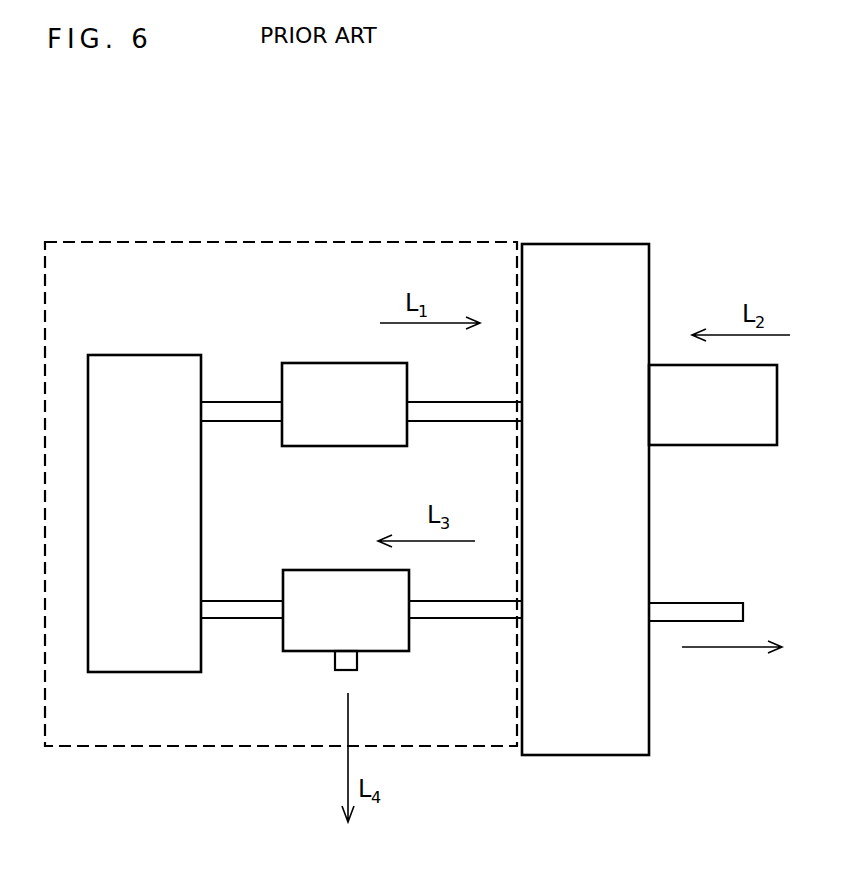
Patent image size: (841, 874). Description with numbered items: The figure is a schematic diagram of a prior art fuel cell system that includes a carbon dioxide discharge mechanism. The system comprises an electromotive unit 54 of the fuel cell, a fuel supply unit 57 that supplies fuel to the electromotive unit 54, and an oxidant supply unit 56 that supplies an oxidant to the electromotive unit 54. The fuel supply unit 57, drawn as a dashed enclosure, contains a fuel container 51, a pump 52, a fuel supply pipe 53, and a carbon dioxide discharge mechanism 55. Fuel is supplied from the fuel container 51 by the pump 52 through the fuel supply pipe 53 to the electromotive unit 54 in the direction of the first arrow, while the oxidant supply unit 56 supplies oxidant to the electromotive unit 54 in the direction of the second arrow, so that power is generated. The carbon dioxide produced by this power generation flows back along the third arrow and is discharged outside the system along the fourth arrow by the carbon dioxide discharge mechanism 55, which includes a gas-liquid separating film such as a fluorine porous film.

The fuel container 51 is at (144, 513).
The pump 52 is at (344, 404).
The fuel supply pipe 53 is at (233, 411).
The electromotive unit 54 is at (585, 499).
The carbon dioxide discharge mechanism 55 is at (346, 620).
The oxidant supply unit 56 is at (713, 405).
The fuel supply unit 57 is at (237, 242).